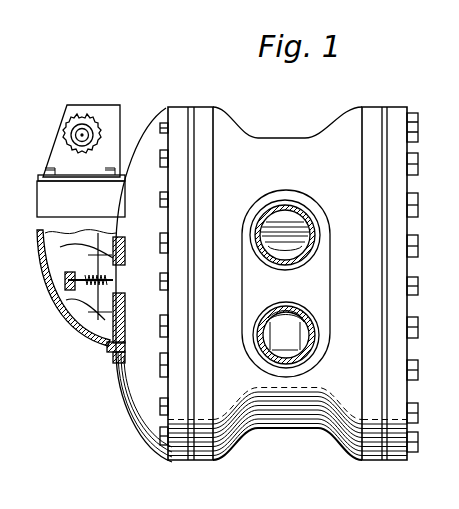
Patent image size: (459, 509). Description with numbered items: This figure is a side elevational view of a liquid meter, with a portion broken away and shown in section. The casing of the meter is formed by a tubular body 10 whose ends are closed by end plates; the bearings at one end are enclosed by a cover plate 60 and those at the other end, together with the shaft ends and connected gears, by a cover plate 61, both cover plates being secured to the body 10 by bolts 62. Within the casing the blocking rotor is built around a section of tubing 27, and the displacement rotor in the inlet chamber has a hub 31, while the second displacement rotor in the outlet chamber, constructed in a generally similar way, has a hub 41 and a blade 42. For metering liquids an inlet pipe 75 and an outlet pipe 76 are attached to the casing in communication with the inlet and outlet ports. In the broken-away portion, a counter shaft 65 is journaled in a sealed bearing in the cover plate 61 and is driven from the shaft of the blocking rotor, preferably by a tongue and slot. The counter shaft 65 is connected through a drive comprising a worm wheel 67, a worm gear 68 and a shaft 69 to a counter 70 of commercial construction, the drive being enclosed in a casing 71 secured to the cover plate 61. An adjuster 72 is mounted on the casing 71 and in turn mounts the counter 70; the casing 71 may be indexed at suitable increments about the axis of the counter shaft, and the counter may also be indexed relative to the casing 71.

The body 10 is at (300, 136).
The section of tubing 27 is at (302, 238).
The hub 31 is at (290, 207).
The hub 41 is at (305, 353).
The blade 42 is at (280, 330).
The cover plate 60 is at (397, 110).
The cover plate 61 is at (180, 110).
The bolts 62 is at (162, 162).
The counter shaft 65 is at (72, 323).
The worm wheel 67 is at (72, 307).
The worm gear 68 is at (62, 275).
The shaft 69 is at (50, 242).
The counter 70 is at (110, 115).
The casing 71 is at (100, 337).
The adjuster 72 is at (43, 192).
The inlet pipe 75 is at (302, 205).
The outlet pipe 76 is at (302, 305).